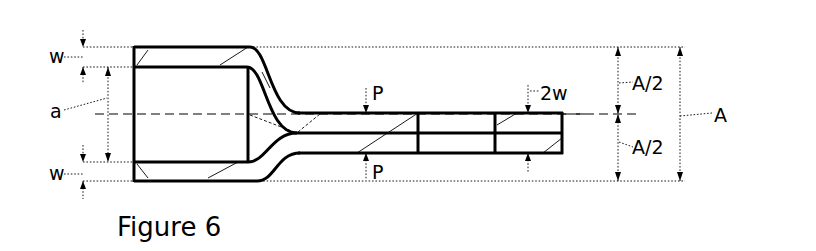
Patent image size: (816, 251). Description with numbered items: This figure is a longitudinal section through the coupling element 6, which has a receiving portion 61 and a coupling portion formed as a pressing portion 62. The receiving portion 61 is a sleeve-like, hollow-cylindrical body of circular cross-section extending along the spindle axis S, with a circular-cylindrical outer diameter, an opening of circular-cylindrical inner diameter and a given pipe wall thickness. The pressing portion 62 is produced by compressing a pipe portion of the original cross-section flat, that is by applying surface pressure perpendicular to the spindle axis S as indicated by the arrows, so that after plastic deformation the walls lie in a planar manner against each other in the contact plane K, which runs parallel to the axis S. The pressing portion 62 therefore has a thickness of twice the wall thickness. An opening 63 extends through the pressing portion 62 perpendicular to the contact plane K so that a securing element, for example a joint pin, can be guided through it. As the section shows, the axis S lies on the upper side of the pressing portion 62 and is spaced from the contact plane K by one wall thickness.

The coupling element 6 is at (325, 72).
The receiving portion 61 is at (187, 62).
The pressing portion 62 is at (393, 143).
The opening 63 is at (457, 140).
The contact plane K is at (343, 135).
The spindle axis S is at (583, 113).